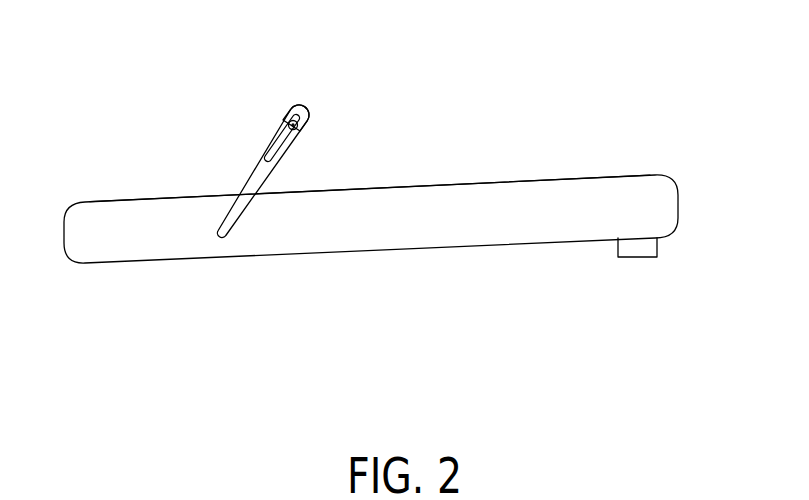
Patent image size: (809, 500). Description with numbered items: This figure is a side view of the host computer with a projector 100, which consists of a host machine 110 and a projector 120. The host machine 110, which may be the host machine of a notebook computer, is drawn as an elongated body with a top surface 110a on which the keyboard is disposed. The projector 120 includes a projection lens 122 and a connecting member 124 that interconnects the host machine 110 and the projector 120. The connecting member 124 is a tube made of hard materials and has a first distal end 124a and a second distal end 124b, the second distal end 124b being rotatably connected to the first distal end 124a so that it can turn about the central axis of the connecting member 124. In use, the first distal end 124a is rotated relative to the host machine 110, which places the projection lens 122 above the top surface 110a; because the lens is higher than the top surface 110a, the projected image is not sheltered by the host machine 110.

The host computer with a projector 100 is at (729, 382).
The host machine 110 is at (633, 208).
The top surface 110a is at (603, 172).
The projector 120 is at (76, 38).
The projection lens 122 is at (303, 105).
The connecting member 124 is at (136, 85).
The first distal end 124a is at (257, 175).
The second distal end 124b is at (290, 112).